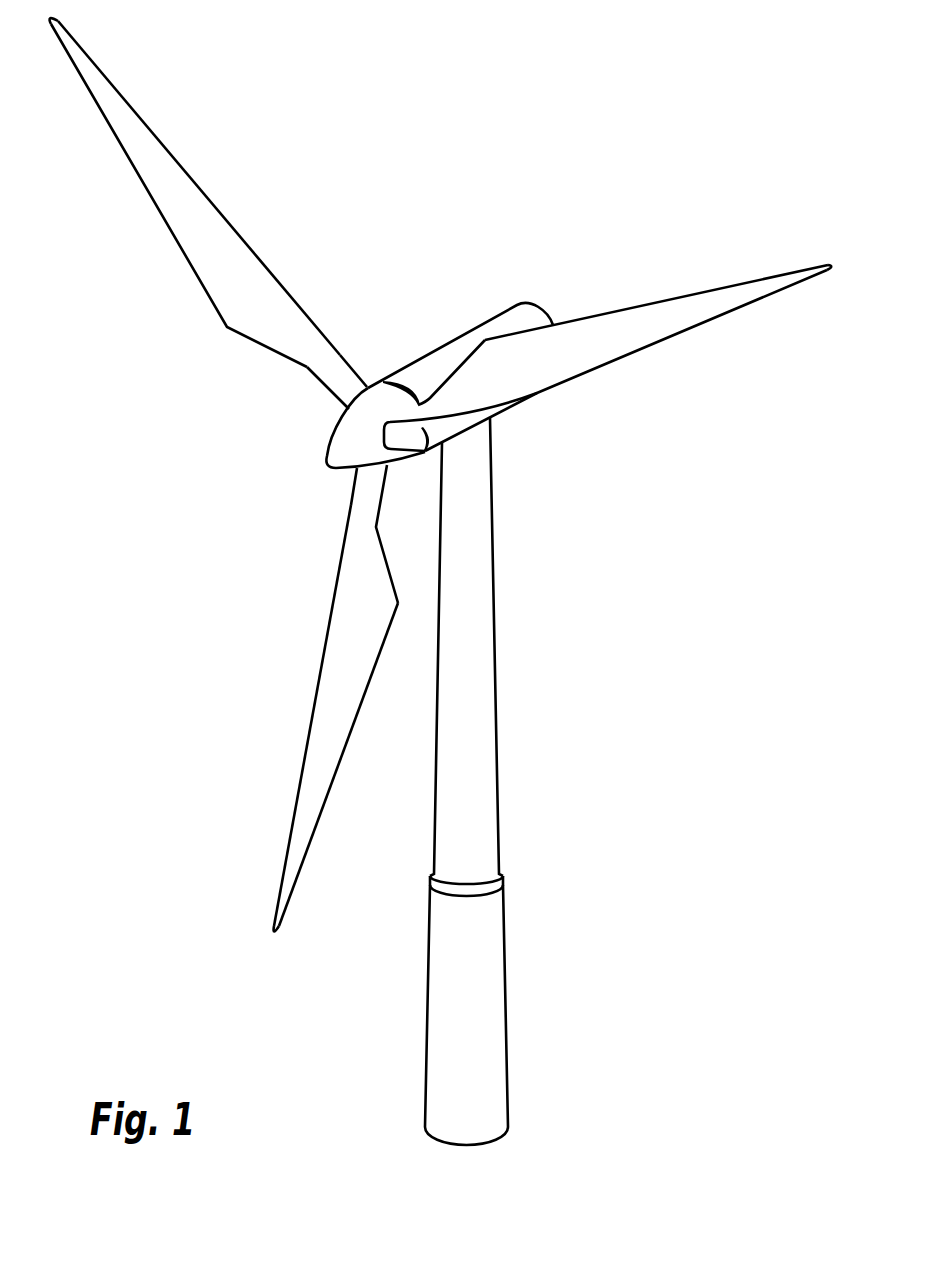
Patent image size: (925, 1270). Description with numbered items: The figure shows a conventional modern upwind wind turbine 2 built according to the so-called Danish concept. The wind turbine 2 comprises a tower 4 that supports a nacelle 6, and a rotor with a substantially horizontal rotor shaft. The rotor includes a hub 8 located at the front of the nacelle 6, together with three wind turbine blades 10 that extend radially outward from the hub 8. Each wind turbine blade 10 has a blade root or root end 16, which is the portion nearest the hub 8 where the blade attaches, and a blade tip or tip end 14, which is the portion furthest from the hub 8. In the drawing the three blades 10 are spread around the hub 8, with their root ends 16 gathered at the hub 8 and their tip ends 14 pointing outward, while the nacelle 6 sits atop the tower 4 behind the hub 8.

The wind turbine 2 is at (600, 721).
The tower 4 is at (484, 645).
The nacelle 6 is at (433, 364).
The hub 8 is at (345, 443).
The wind turbine blade 10 is at (240, 302).
The blade tip 14 is at (90, 72).
The blade root 16 is at (348, 410).